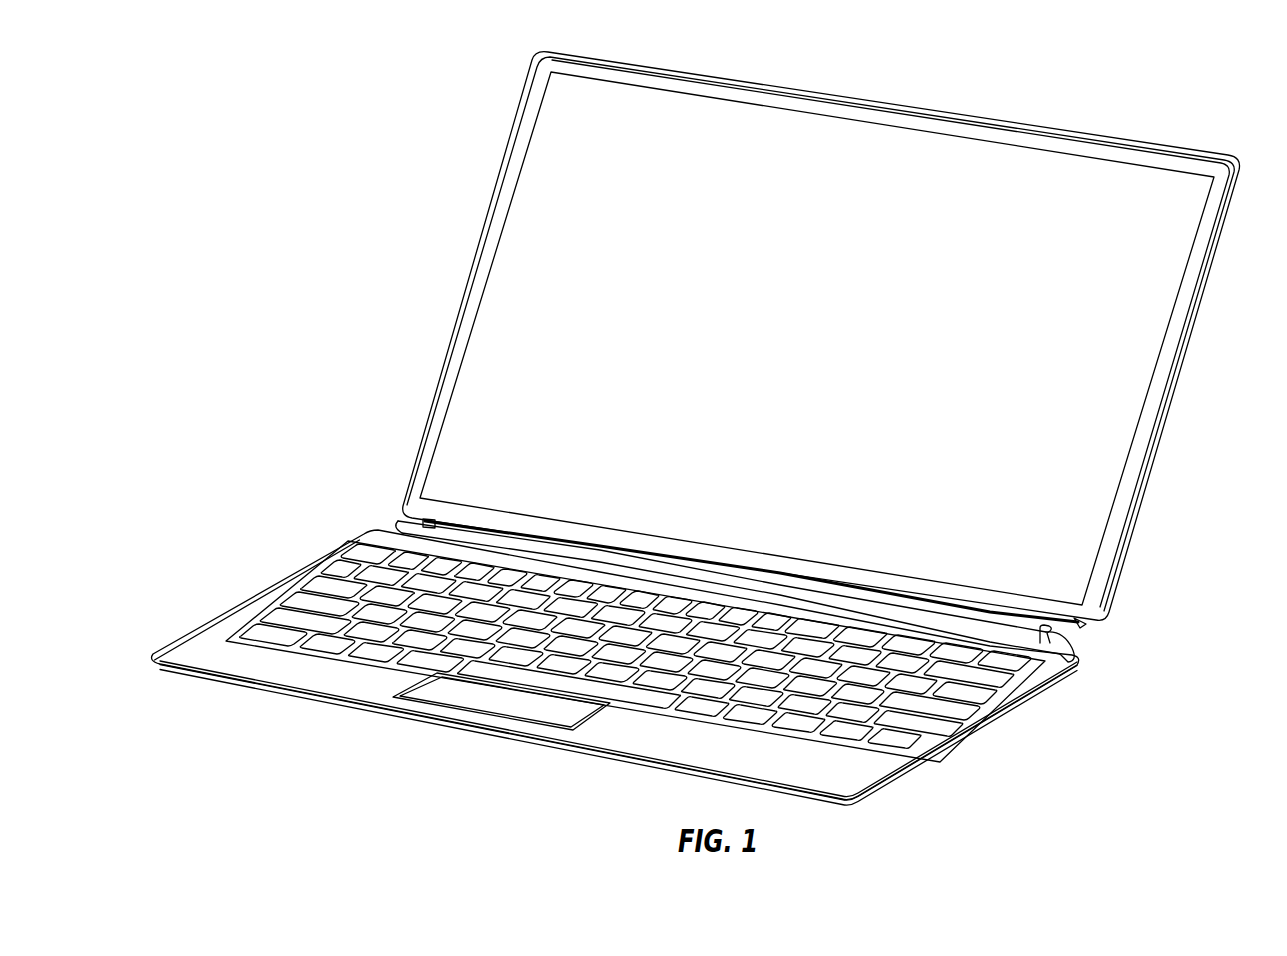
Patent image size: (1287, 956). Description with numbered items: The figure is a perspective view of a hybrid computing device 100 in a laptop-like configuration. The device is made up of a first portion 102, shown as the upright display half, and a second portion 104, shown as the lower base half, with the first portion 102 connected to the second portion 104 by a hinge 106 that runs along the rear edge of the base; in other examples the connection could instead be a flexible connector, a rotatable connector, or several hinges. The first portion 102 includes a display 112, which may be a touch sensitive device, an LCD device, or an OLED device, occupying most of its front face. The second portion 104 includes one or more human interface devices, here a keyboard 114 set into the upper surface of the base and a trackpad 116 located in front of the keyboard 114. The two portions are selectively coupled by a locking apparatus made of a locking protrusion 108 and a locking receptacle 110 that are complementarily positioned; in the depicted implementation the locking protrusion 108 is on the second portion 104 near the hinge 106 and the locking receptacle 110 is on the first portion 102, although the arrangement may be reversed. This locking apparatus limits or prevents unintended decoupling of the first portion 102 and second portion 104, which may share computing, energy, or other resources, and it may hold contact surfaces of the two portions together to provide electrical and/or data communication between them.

The hybrid computing device 100 is at (1184, 92).
The first portion 102 is at (1196, 337).
The second portion 104 is at (1020, 712).
The hinge 106 is at (1080, 660).
The locking protrusion 108 is at (1052, 633).
The locking receptacle 110 is at (1082, 622).
The display 112 is at (955, 148).
The keyboard 114 is at (311, 589).
The trackpad 116 is at (432, 692).